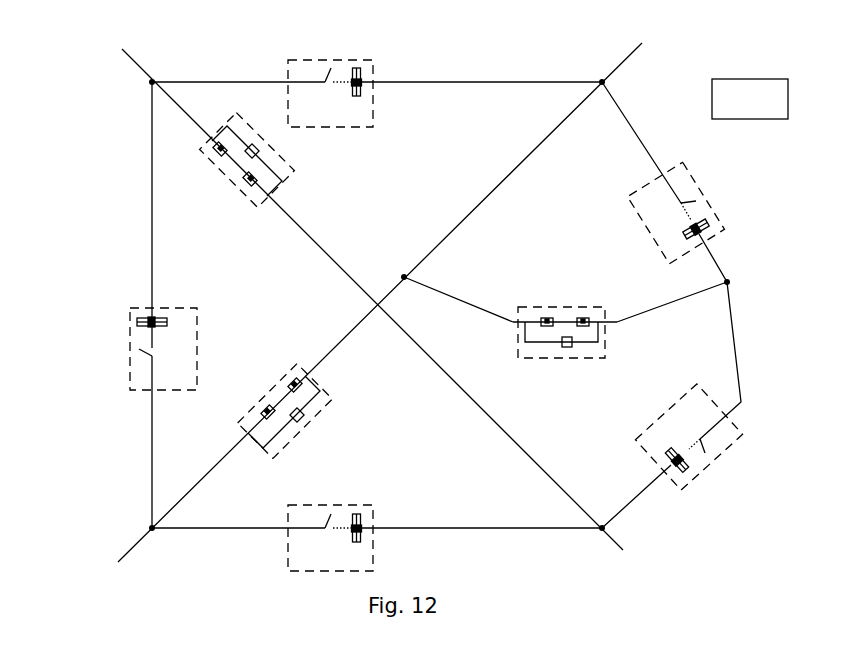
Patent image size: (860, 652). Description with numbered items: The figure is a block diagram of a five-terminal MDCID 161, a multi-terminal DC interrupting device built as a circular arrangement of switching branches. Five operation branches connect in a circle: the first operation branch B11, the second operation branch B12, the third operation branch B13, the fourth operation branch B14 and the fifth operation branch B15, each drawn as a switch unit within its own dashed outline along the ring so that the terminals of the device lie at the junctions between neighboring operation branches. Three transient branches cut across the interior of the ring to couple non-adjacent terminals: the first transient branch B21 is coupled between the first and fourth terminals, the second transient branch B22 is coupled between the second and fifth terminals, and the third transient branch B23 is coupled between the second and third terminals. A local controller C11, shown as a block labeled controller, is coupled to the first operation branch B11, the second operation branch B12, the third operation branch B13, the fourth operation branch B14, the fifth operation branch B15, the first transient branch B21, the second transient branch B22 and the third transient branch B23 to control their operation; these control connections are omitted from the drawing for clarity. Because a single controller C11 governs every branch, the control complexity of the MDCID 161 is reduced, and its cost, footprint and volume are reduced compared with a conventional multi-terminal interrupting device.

The five-terminal MDCID 161 is at (93, 83).
The first operation branch B11 is at (132, 370).
The second operation branch B12 is at (314, 62).
The third operation branch B13 is at (696, 187).
The fourth operation branch B14 is at (722, 448).
The fifth operation branch B15 is at (315, 502).
The first transient branch B21 is at (206, 146).
The second transient branch B22 is at (298, 363).
The third transient branch B23 is at (605, 301).
The local controller C11 is at (726, 82).